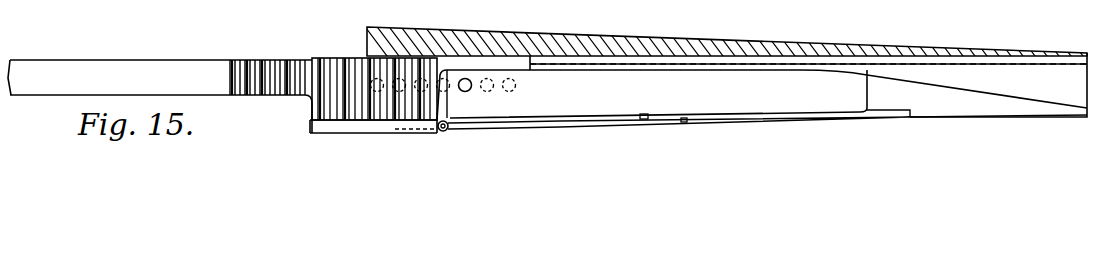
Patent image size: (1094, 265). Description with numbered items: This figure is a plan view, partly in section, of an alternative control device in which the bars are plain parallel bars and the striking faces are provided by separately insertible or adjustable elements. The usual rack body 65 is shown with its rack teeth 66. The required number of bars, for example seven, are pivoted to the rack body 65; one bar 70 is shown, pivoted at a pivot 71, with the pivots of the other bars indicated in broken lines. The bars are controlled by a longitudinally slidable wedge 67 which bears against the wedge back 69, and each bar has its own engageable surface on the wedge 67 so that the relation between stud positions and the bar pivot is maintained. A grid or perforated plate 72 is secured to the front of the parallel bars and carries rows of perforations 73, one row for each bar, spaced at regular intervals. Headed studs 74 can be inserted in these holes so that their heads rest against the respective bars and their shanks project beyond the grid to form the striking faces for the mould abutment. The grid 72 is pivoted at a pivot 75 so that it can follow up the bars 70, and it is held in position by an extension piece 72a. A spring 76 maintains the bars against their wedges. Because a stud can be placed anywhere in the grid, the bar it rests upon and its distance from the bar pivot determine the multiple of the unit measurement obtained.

The rack body 65 is at (249, 80).
The rack teeth 66 is at (357, 100).
The longitudinally slidable wedge 67 is at (1047, 92).
The wedge back 69 is at (798, 47).
The bar 70 is at (552, 100).
The pivot 71 is at (465, 92).
The grid or perforated plate 72 is at (770, 118).
The extension piece 72a is at (394, 131).
The perforations 73 is at (686, 121).
The headed studs 74 is at (645, 119).
The pivot 75 is at (440, 130).
The spring 76 is at (506, 126).